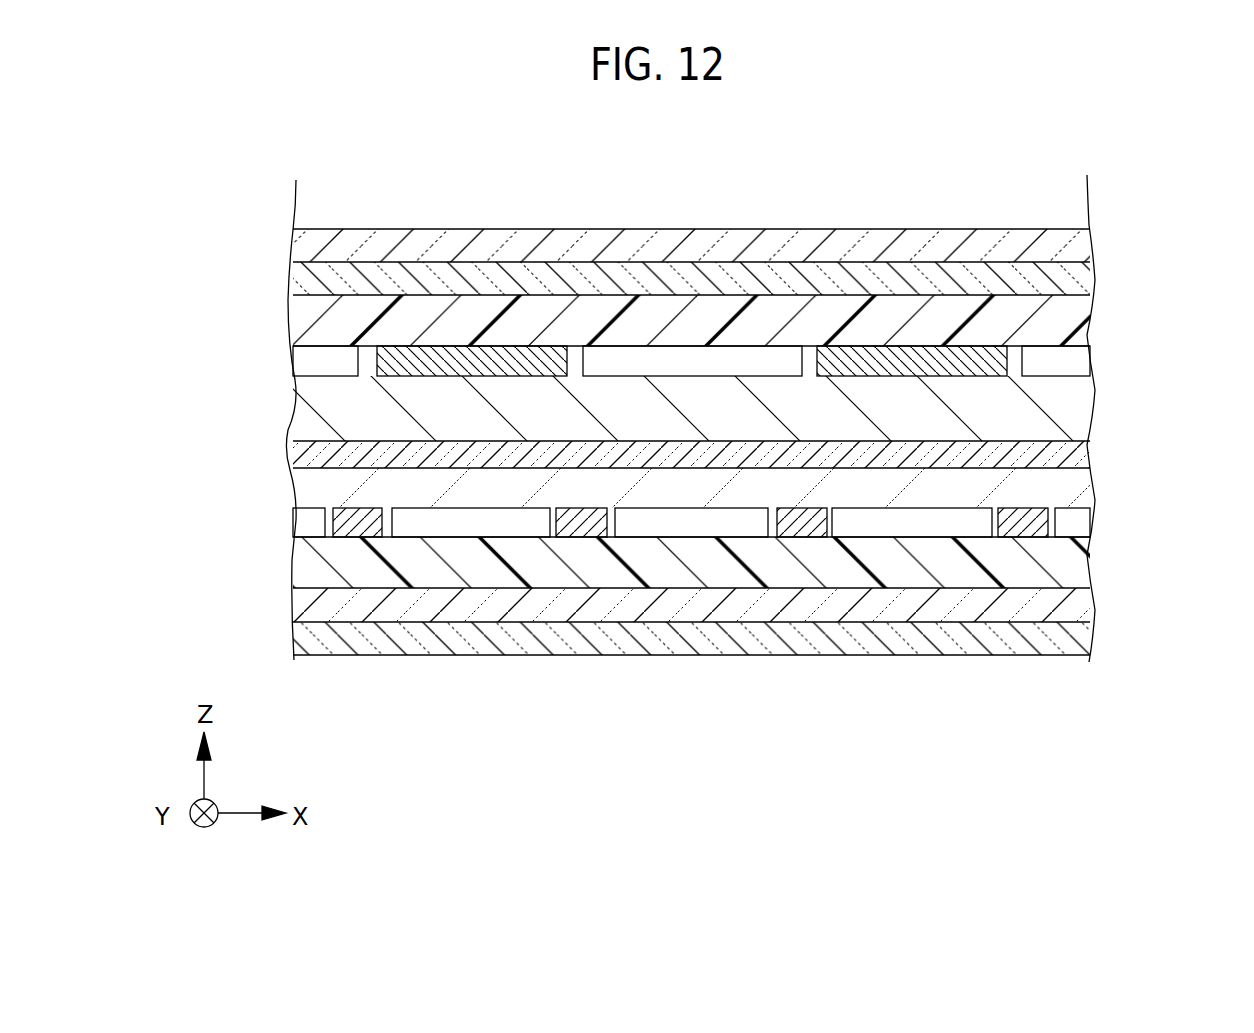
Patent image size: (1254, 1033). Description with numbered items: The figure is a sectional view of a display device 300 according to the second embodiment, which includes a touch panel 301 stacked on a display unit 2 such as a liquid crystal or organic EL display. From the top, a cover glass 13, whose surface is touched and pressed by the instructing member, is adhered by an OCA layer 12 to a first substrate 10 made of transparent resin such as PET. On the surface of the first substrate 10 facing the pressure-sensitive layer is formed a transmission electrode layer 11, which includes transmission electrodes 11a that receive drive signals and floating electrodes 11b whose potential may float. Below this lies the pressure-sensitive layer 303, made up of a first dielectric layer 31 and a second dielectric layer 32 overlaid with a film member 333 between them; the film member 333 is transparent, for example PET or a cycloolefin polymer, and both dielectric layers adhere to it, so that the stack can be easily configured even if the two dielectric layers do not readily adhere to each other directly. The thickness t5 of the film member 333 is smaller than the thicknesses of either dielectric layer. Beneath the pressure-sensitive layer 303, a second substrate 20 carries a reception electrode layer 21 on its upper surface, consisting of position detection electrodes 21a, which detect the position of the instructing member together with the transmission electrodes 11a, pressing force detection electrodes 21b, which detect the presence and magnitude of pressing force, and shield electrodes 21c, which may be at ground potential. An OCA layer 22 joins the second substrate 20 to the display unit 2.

The display device 300 is at (363, 155).
The touch panel 301 is at (699, 226).
The cover glass 13 is at (823, 243).
The OCA layer 12 is at (877, 278).
The first substrate 10 is at (1017, 313).
The transmission electrode layer 11 is at (756, 306).
The transmission electrodes 11a is at (337, 355).
The floating electrodes 11b is at (428, 363).
The pressure-sensitive layer 303 is at (605, 454).
The first dielectric layer 31 is at (342, 390).
The film member 333 is at (306, 453).
The second dielectric layer 32 is at (340, 472).
The thickness of the film member t5 is at (428, 447).
The reception electrode layer 21 is at (702, 584).
The position detection electrodes 21a is at (312, 540).
The pressing force detection electrodes 21b is at (693, 538).
The shield electrodes 21c is at (362, 537).
The second substrate 20 is at (965, 578).
The OCA layer 22 is at (1015, 608).
The display unit 2 is at (691, 637).